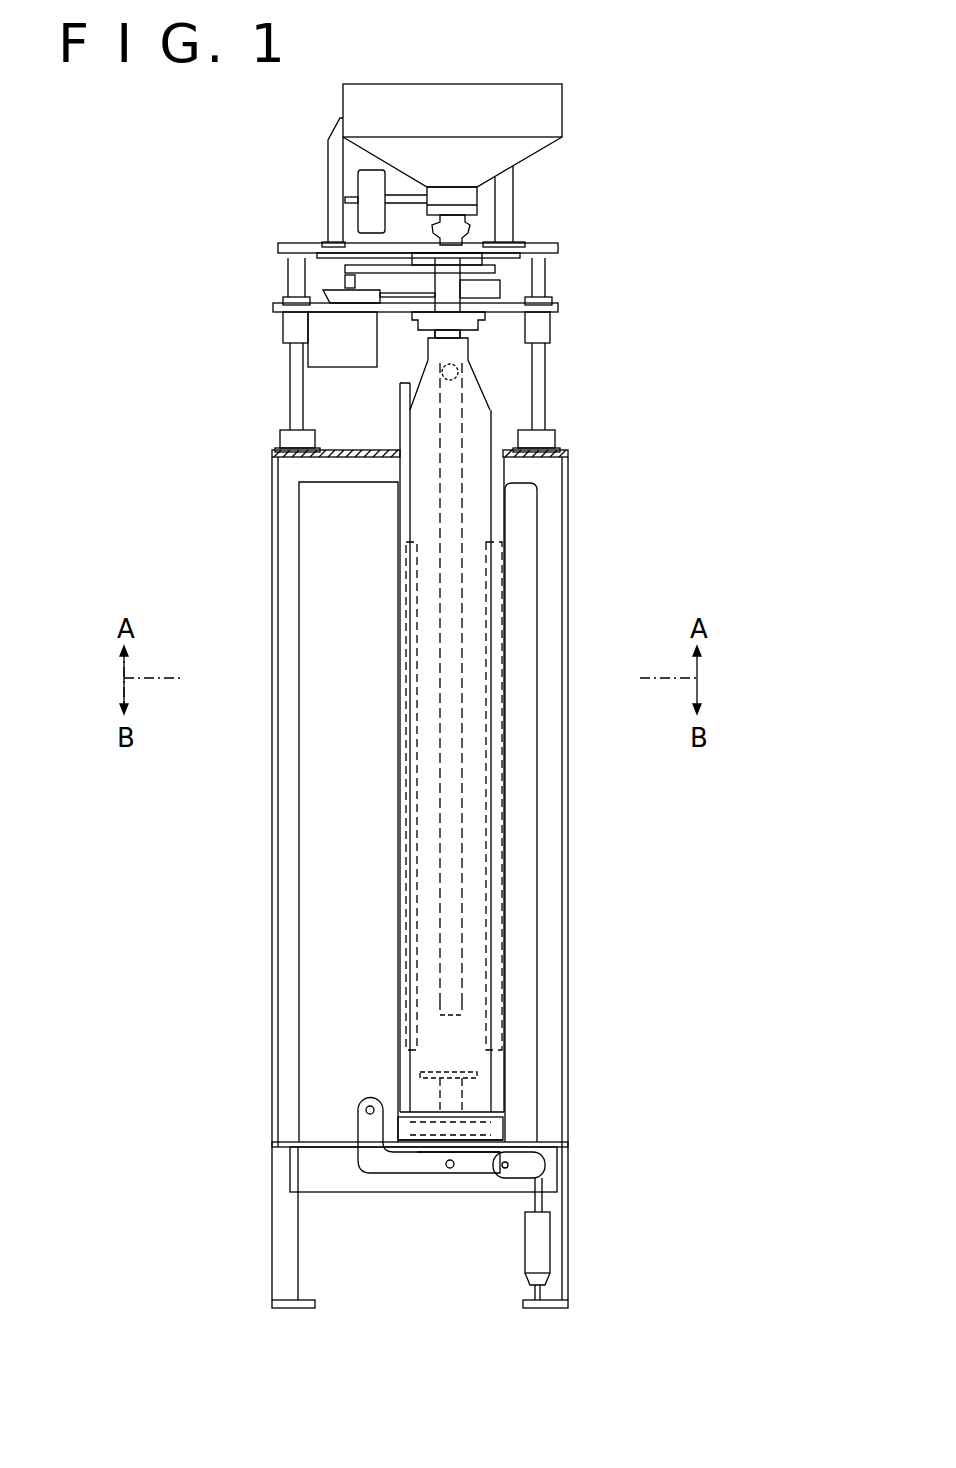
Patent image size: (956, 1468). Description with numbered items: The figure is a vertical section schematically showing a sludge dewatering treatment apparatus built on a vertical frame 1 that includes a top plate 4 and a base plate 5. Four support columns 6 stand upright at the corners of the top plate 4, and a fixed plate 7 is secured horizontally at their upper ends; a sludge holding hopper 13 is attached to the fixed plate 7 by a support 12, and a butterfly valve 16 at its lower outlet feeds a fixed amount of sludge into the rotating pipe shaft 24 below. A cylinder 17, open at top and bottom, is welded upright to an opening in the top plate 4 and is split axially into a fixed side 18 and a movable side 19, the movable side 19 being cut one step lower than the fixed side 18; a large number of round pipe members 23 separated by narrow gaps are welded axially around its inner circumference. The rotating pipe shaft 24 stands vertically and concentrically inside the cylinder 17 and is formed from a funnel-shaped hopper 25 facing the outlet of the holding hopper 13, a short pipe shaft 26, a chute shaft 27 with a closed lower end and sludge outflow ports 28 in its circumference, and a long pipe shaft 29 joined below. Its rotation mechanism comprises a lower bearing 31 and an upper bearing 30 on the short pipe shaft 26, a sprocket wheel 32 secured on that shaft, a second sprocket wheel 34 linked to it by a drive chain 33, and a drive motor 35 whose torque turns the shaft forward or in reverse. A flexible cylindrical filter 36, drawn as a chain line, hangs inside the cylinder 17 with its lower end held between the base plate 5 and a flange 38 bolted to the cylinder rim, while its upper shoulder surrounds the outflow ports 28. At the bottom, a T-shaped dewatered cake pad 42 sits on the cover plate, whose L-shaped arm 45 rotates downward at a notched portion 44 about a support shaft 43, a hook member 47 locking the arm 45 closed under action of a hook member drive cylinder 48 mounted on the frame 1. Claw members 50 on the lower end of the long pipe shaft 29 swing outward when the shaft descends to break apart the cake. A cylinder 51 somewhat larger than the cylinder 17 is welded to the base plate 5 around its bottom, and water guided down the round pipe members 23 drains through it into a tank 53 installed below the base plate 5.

The vertical frame 1 is at (568, 558).
The top plate 4 is at (347, 452).
The base plate 5 is at (323, 1140).
The support columns 6 is at (297, 403).
The fixed plate 7 is at (297, 243).
The support 12 is at (332, 153).
The sludge holding hopper 13 is at (550, 101).
The butterfly valve 16 is at (468, 203).
The cylinder 17 is at (400, 588).
The fixed side 18 is at (400, 510).
The movable side 19 is at (505, 622).
The round pipe members 23 is at (410, 700).
The rotating pipe shaft 24 is at (463, 415).
The hopper 25 is at (458, 226).
The short pipe shaft 26 is at (462, 283).
The chute shaft 27 is at (460, 345).
The sludge outflow ports 28 is at (458, 370).
The long pipe shaft 29 is at (440, 812).
The bearing 30 is at (493, 265).
The bearing 31 is at (427, 322).
The sprocket wheel 32 is at (475, 303).
The drive chain 33 is at (390, 307).
The sprocket wheel 34 is at (323, 293).
The drive motor 35 is at (353, 355).
The cylindrical filter 36 is at (400, 465).
The flange 38 is at (500, 1130).
The dewatered cake pad 42 is at (430, 1067).
The support shaft 43 is at (368, 1100).
The notched portion 44 is at (438, 1145).
The arm 45 is at (475, 1163).
The hook member 47 is at (532, 1165).
The hook member drive cylinder 48 is at (540, 1237).
The claw members 50 is at (462, 1017).
The cylinder 51 is at (505, 1118).
The tank 53 is at (338, 1177).